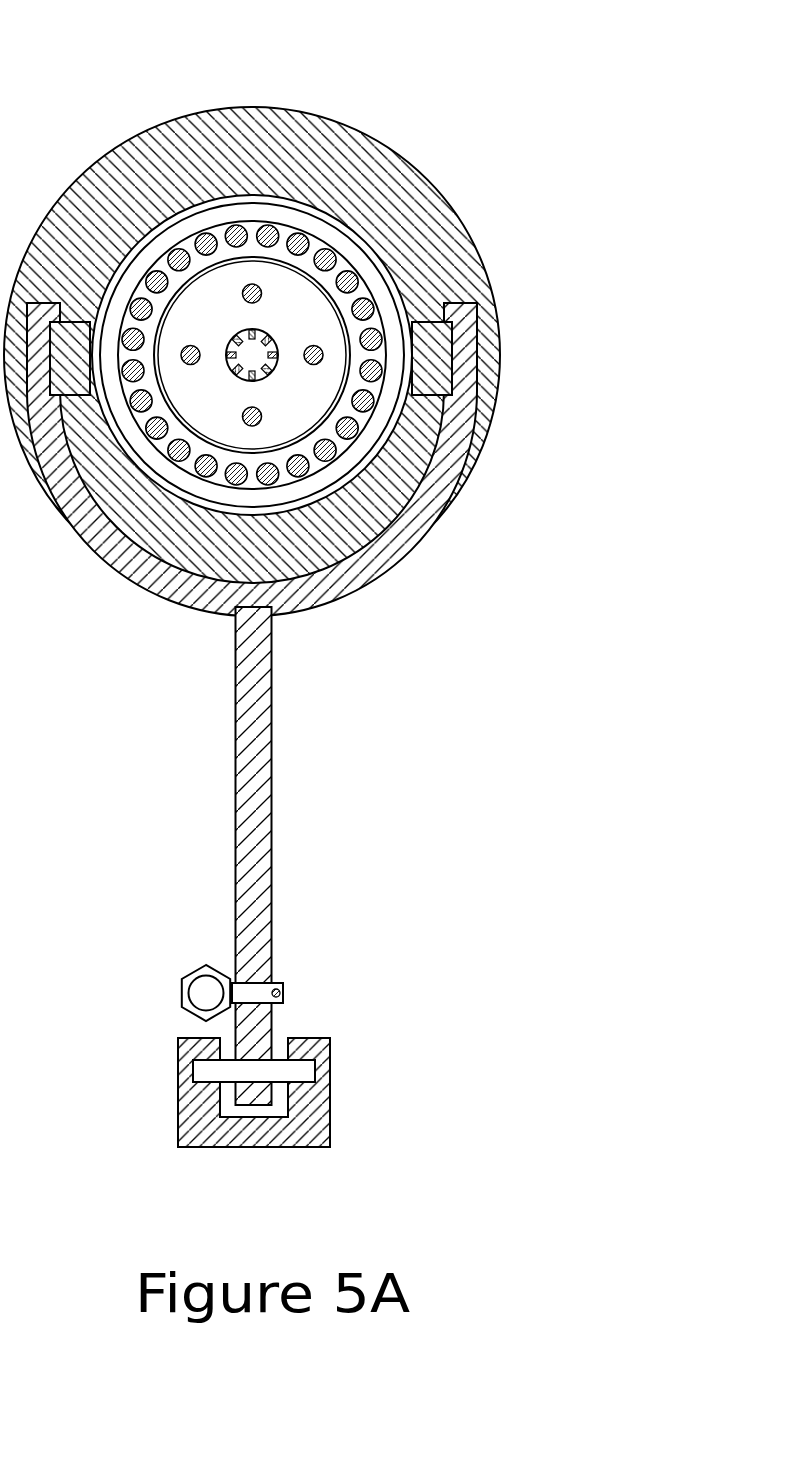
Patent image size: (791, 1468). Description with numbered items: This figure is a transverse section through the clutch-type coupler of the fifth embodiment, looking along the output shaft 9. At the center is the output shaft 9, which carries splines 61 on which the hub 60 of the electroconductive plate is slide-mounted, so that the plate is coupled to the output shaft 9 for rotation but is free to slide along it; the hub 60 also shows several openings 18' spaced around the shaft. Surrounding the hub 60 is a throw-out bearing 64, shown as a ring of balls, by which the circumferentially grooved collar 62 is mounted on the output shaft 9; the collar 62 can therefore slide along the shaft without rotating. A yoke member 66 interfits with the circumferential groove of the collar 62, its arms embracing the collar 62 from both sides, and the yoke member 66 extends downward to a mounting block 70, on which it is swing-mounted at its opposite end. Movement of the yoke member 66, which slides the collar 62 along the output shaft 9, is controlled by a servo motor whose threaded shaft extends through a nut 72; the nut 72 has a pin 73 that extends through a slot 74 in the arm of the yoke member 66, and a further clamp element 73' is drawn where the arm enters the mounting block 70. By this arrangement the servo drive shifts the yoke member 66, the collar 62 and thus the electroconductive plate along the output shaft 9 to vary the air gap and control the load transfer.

The circumferentially grooved collar 62 is at (218, 108).
The hub 60 is at (207, 317).
The throw-out bearing 64 is at (193, 230).
The bolt holes 18' is at (306, 264).
The output shaft 9 is at (255, 353).
The splines 61 is at (265, 375).
The yoke member 66 is at (274, 740).
The nut 72 is at (185, 972).
The slot 74 is at (248, 973).
The pin 73 is at (297, 949).
The clamp bar 73' is at (312, 1044).
The mounting block 70 is at (333, 1120).